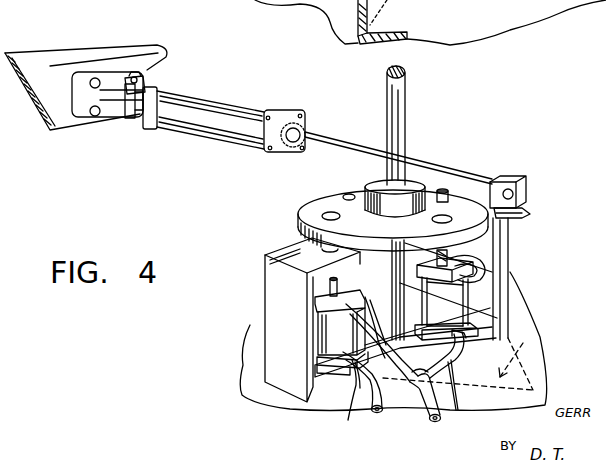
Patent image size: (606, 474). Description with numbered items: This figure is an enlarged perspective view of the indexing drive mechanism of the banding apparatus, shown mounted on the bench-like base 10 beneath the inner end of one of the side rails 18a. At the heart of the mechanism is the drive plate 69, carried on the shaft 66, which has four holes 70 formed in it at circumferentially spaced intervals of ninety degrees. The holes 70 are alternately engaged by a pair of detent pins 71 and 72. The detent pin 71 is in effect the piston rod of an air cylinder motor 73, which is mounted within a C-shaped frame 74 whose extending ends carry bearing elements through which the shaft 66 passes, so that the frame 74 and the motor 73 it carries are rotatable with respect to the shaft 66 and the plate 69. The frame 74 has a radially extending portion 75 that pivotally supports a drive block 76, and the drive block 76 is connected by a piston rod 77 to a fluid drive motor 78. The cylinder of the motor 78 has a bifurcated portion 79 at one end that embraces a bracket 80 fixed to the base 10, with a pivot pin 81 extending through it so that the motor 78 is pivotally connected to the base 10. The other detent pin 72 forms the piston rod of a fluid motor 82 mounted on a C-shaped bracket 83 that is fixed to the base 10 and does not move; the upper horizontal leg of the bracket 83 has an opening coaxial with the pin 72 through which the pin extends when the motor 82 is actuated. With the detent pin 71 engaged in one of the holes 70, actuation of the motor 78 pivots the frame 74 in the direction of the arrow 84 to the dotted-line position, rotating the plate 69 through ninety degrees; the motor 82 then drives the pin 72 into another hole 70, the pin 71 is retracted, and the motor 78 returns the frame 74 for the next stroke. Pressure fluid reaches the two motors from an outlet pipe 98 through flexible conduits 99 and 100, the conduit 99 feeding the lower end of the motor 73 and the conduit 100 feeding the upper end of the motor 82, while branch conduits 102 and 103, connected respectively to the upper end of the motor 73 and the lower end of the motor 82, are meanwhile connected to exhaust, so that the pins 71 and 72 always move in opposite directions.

The base 10 is at (61, 52).
The side rail 18a is at (430, 0).
The shaft 66 is at (398, 128).
The drive plate 69 is at (462, 238).
The holes 70 is at (331, 212).
The detent pin 71 is at (444, 190).
The detent pin 72 is at (331, 288).
The air cylinder motor 73 is at (460, 311).
The C-shaped frame 74 is at (503, 277).
The radially extending portion 75 is at (523, 212).
The drive block 76 is at (515, 200).
The piston rod 77 is at (322, 136).
The fluid drive motor 78 is at (227, 123).
The bifurcated portion 79 is at (133, 112).
The bracket 80 is at (110, 102).
The pivot pin 81 is at (147, 80).
The fluid motor 82 is at (352, 347).
The C-shaped bracket 83 is at (292, 334).
The arrow 84 is at (500, 367).
The outlet pipe 98 is at (420, 413).
The flexible conduit 99 is at (453, 410).
The flexible conduit 100 is at (393, 373).
The branch conduit 102 is at (365, 297).
The branch conduit 103 is at (352, 403).